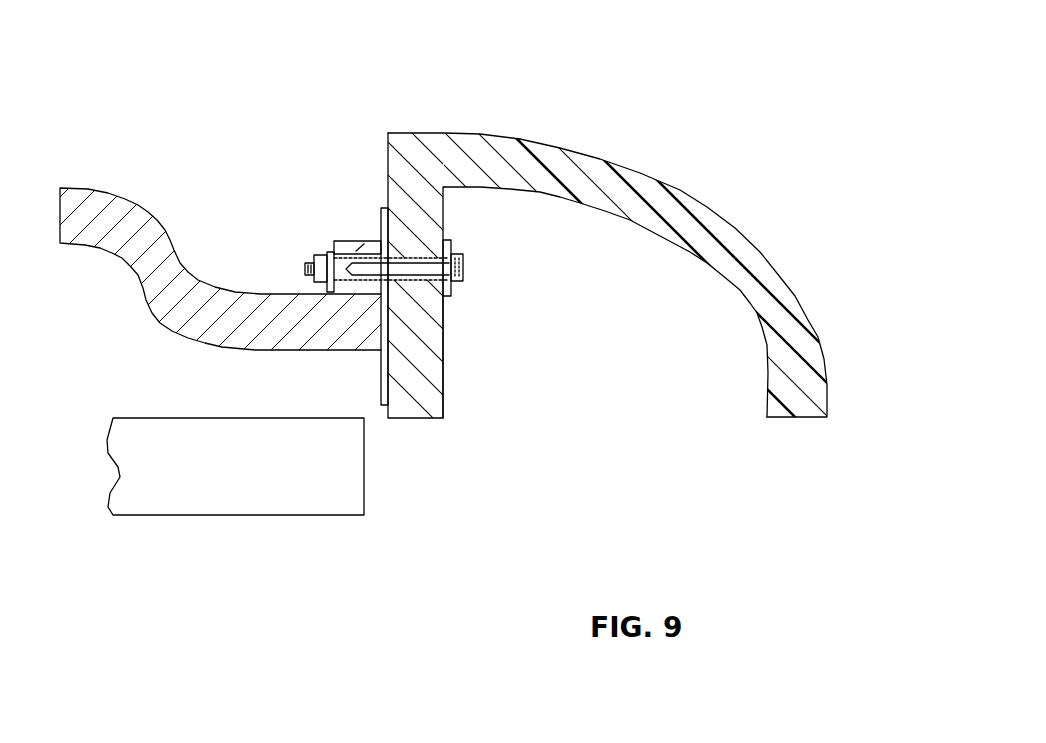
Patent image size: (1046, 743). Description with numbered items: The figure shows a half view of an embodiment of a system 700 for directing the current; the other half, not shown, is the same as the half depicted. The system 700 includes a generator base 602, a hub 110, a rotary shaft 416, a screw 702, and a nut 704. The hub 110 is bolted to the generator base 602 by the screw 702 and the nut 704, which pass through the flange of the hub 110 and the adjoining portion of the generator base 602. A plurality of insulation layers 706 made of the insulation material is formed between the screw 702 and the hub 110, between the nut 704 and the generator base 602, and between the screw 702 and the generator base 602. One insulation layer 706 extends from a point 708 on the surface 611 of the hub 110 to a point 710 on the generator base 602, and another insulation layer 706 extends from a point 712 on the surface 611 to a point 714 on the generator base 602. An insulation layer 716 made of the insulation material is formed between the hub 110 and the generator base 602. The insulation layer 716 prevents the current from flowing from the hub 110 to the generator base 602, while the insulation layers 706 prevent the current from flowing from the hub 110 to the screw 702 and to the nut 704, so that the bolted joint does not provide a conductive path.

The system for directing the current 700 is at (702, 82).
The generator base 602 is at (127, 194).
The hub 110 is at (710, 208).
The surface 611 is at (763, 330).
The insulation layer 716 is at (383, 217).
The point on generator base 710 is at (332, 250).
The point on generator base 714 is at (330, 288).
The nut 704 is at (320, 258).
The insulation layers 706 is at (423, 253).
The screw 702 is at (463, 273).
The point on surface 708 is at (445, 240).
The point on surface 712 is at (444, 298).
The rotary shaft 416 is at (247, 516).